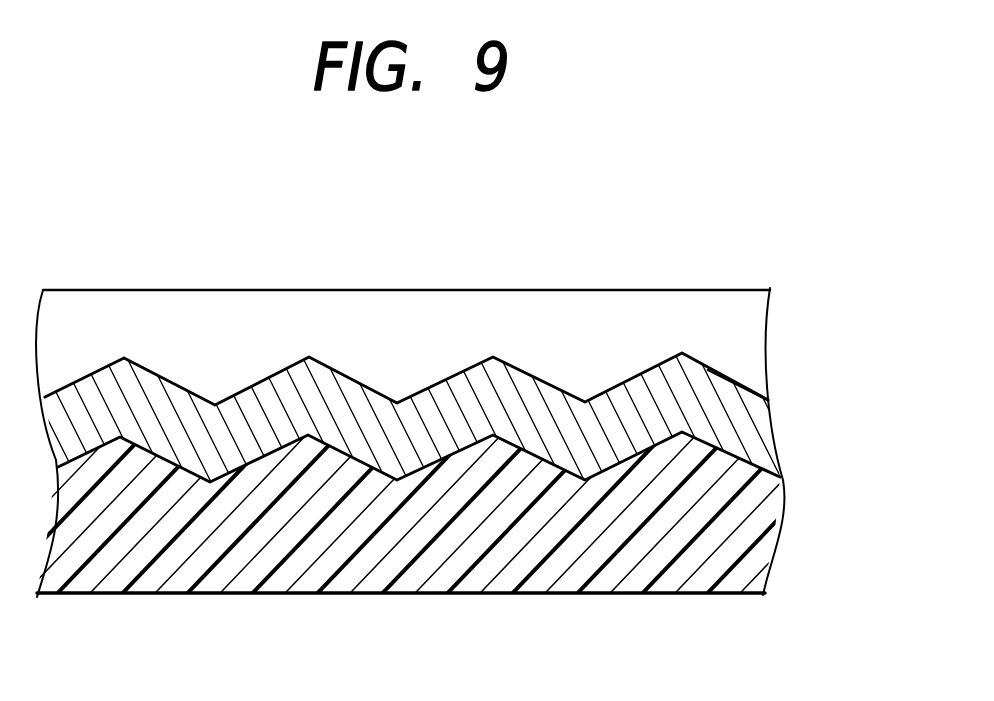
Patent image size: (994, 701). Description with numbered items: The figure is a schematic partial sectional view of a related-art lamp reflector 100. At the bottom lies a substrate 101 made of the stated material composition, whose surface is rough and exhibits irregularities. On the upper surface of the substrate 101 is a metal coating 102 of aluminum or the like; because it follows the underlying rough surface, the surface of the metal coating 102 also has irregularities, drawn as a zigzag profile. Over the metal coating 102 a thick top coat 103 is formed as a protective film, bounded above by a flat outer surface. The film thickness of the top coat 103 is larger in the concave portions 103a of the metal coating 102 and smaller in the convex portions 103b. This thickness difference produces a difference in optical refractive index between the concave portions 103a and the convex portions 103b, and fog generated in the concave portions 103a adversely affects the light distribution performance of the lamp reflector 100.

The lamp reflector 100 is at (366, 250).
The substrate 101 is at (435, 568).
The metal coating 102 is at (302, 368).
The top coat 103 is at (642, 310).
The concave portions 103a is at (569, 370).
The convex portions 103b is at (696, 337).